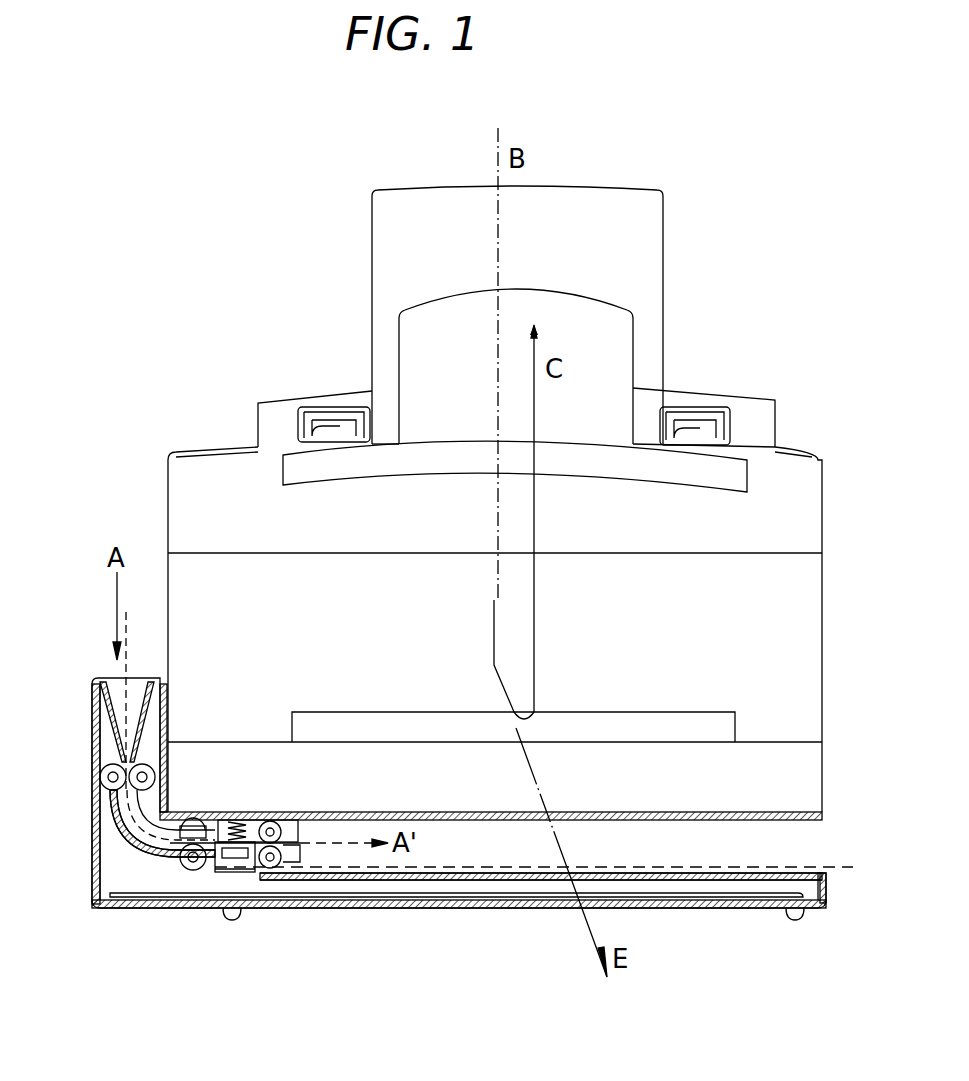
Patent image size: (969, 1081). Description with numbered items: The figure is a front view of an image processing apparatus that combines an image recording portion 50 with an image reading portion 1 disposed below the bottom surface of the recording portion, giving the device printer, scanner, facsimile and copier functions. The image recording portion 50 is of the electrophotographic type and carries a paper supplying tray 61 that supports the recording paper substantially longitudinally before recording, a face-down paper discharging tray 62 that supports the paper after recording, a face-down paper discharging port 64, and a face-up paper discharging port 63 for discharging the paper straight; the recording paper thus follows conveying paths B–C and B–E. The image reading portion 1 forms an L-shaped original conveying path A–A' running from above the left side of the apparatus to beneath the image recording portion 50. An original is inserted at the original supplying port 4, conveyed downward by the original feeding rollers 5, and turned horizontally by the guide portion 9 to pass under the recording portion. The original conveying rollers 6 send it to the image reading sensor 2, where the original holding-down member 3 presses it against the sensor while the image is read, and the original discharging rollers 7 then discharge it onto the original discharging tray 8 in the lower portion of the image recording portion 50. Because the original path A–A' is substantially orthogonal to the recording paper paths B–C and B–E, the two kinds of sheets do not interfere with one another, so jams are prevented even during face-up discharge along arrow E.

The image reading portion 1 is at (197, 916).
The image reading sensor 2 is at (233, 858).
The original holding-down member 3 is at (255, 860).
The original supplying port 4 is at (118, 682).
The original feeding rollers 5 is at (100, 762).
The original conveying rollers 6 is at (185, 866).
The original discharging rollers 7 is at (296, 863).
The original discharging tray 8 is at (440, 880).
The guide portion 9 is at (130, 832).
The image recording portion 50 is at (212, 445).
The paper supplying tray 61 is at (650, 240).
The face-down paper discharging tray 62 is at (620, 345).
The face-up paper discharging port 63 is at (712, 712).
The face-down paper discharging port 64 is at (718, 470).